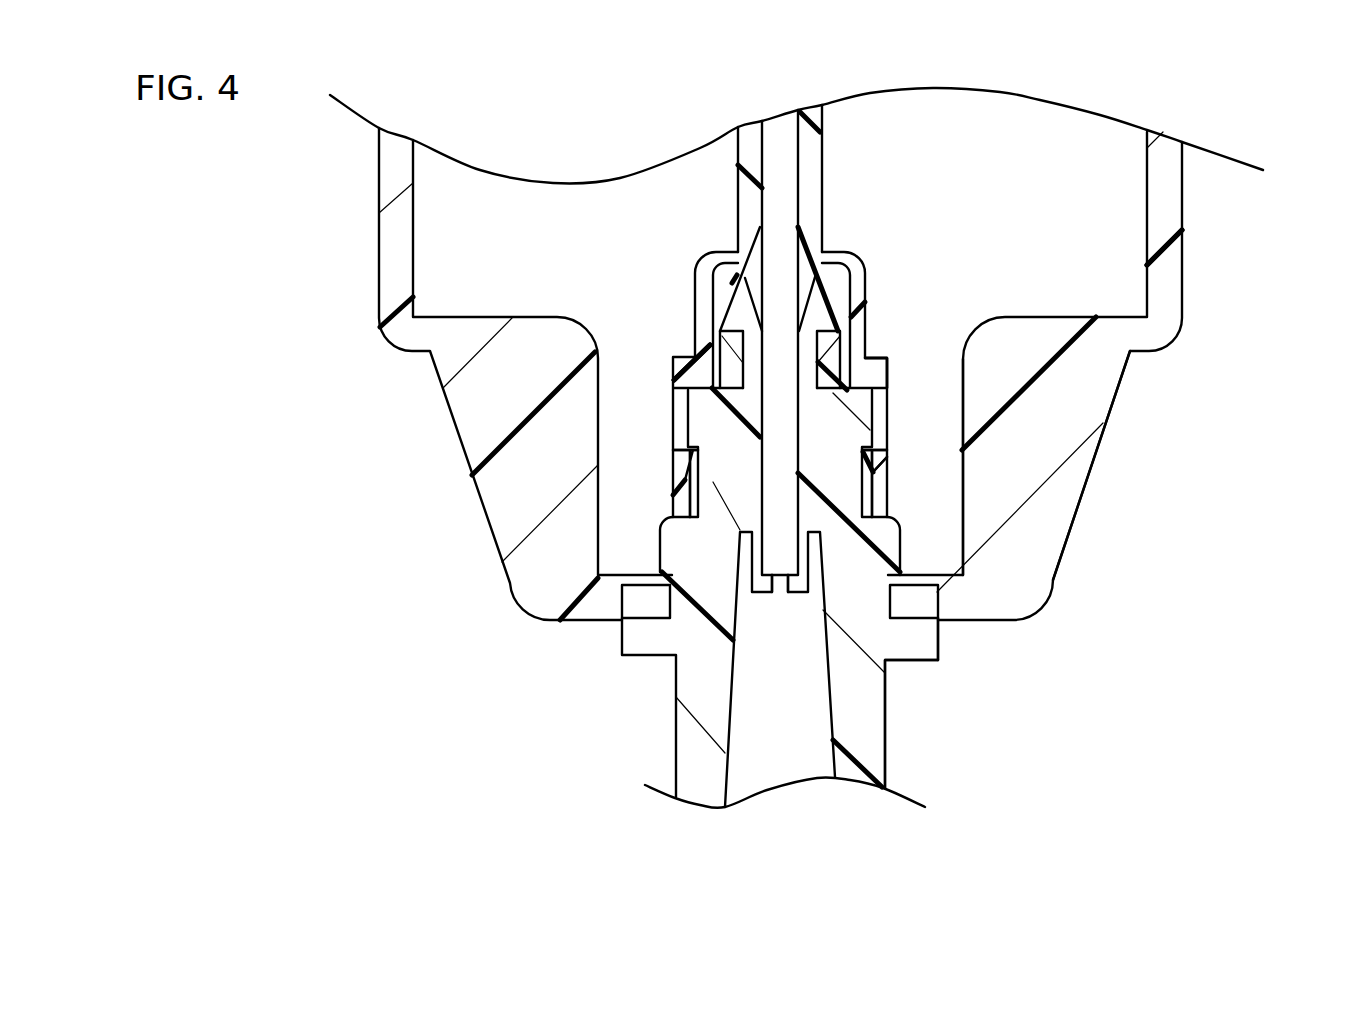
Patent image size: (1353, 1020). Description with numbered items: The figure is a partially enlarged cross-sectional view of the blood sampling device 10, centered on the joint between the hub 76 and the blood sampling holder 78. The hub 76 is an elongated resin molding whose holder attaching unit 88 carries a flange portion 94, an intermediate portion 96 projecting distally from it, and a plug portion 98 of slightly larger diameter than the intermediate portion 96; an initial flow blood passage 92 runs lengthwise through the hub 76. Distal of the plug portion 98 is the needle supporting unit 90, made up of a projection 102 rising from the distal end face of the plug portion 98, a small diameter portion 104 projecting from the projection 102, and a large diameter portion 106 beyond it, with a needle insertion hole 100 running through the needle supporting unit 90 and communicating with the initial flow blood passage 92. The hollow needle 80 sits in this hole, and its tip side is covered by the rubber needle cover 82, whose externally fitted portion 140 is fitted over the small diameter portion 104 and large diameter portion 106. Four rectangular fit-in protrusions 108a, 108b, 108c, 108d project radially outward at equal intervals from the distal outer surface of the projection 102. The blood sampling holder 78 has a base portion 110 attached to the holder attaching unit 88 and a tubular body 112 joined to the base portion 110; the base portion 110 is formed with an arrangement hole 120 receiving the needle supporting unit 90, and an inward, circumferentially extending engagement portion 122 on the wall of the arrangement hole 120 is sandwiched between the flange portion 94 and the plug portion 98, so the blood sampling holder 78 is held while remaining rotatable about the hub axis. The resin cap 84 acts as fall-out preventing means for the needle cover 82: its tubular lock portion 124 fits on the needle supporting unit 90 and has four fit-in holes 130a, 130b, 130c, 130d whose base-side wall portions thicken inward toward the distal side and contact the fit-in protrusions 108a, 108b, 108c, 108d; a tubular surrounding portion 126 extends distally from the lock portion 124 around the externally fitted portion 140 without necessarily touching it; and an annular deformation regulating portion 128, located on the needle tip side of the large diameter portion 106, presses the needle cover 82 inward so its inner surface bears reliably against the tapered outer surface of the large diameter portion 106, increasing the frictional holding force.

The blood sampling device 10 is at (578, 83).
The hub 76 is at (903, 756).
The blood sampling holder 78 is at (1202, 304).
The hollow needle 80 is at (772, 137).
The needle cover 82 is at (812, 160).
The cap 84 is at (699, 240).
The holder attaching unit 88 is at (930, 662).
The needle supporting unit 90 is at (870, 378).
The initial flow blood passage 92 is at (832, 743).
The flange portion 94 is at (928, 643).
The intermediate portion 96 is at (905, 600).
The plug portion 98 is at (893, 550).
The needle insertion hole 100 is at (762, 548).
The projection 102 is at (713, 483).
The small diameter portion 104 is at (750, 355).
The large diameter portion 106 is at (747, 312).
The fit-in protrusion 108a is at (688, 435).
The fit-in protrusion 108b is at (649, 483).
The fit-in protrusion 108c is at (872, 435).
The fit-in protrusion 108d is at (909, 483).
The base portion 110 is at (1070, 485).
The tubular body 112 is at (1172, 222).
The arrangement hole 120 is at (962, 424).
The engagement portion 122 is at (610, 607).
The lock portion 124 is at (878, 495).
The surrounding portion 126 is at (860, 313).
The deformation regulating portion 128 is at (832, 257).
The fit-in hole 130a is at (682, 417).
The fit-in hole 130b is at (657, 374).
The fit-in hole 130c is at (878, 417).
The fit-in hole 130d is at (910, 381).
The externally fitted portion 140 is at (838, 382).